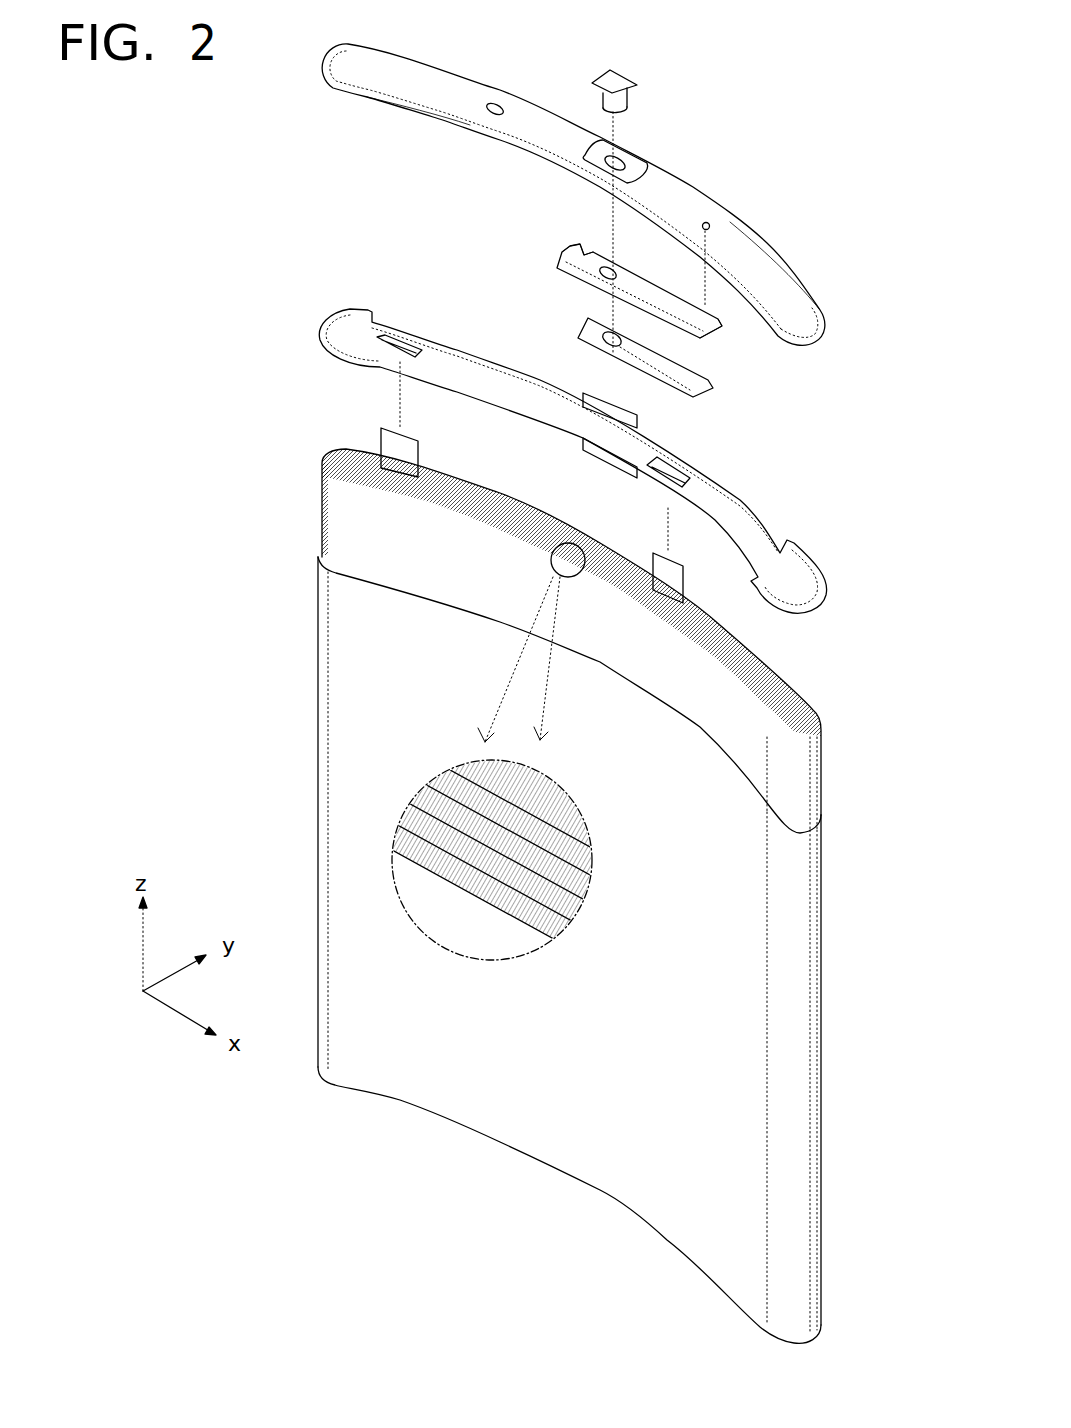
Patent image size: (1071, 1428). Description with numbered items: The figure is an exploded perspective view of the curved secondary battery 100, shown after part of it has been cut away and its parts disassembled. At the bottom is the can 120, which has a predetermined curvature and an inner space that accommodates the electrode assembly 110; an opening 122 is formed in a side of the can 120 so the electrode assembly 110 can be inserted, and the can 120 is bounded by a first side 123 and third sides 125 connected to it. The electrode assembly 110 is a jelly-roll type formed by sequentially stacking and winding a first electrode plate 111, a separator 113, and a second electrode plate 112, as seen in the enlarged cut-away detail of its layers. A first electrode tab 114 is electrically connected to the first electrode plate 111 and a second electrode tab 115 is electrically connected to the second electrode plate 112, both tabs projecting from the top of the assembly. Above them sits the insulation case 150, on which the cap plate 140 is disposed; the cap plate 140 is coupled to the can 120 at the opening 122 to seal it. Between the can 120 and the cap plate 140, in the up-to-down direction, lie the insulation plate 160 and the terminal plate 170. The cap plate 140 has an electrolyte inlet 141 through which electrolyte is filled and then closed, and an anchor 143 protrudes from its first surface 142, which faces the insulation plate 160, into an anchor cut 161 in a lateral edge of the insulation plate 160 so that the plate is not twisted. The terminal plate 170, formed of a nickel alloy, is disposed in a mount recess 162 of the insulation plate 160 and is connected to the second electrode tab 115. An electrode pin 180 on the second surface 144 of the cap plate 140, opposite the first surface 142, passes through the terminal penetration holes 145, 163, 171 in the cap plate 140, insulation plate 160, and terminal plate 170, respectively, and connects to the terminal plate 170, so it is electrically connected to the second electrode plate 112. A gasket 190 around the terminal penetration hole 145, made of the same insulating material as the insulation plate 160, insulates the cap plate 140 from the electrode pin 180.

The curved secondary battery 100 is at (791, 33).
The electrode assembly 110 is at (818, 768).
The first electrode plate 111 is at (589, 848).
The second electrode plate 112 is at (584, 893).
The separator 113 is at (589, 872).
The first electrode tab 114 is at (383, 433).
The second electrode tab 115 is at (652, 556).
The can 120 is at (322, 672).
The opening 122 is at (358, 577).
The first side 123 is at (610, 1162).
The third sides 125 is at (815, 1120).
The cap plate 140 is at (699, 196).
The electrolyte inlet 141 is at (495, 104).
The first surface 142 is at (384, 98).
The anchor 143 is at (710, 226).
The second surface 144 is at (765, 270).
The terminal penetration hole 145 is at (607, 167).
The insulation case 150 is at (780, 570).
The insulation plate 160 is at (725, 328).
The anchor cut 161 is at (712, 332).
The mount recess 162 is at (560, 265).
The terminal penetration hole 163 is at (598, 279).
The terminal plate 170 is at (706, 384).
The terminal penetration hole 171 is at (603, 342).
The electrode pin 180 is at (634, 86).
The gasket 190 is at (595, 150).